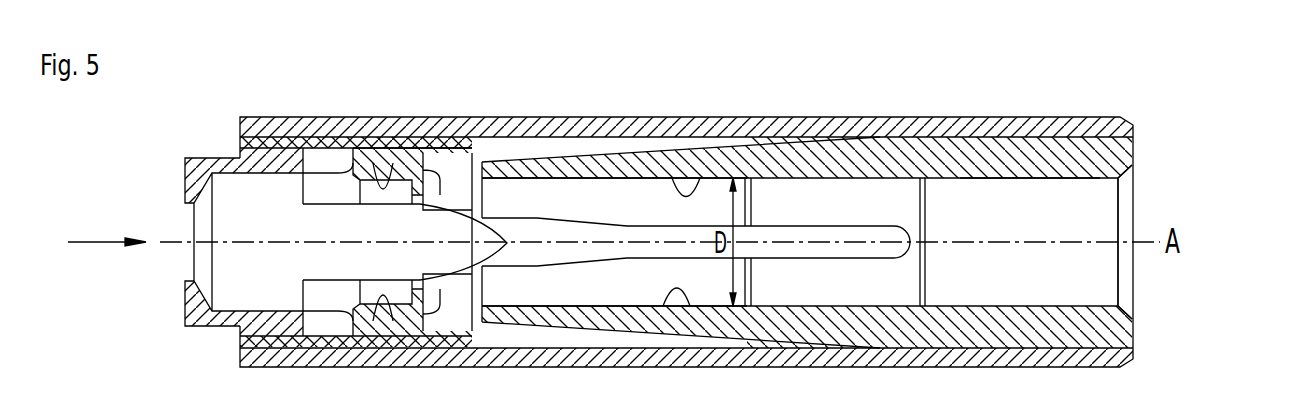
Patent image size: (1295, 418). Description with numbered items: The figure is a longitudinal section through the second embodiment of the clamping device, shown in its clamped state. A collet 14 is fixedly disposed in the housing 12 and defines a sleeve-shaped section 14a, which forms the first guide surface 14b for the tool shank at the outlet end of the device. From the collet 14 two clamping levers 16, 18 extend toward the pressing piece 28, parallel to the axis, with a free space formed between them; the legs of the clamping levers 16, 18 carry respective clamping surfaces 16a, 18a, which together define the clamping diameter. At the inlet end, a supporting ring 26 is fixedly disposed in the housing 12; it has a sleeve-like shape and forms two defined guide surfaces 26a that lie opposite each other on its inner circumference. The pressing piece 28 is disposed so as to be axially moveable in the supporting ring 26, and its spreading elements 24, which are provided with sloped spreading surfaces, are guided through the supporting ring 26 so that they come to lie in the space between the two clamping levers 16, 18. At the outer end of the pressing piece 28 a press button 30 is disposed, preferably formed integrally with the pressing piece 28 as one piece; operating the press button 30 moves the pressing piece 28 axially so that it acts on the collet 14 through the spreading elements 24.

The housing 12 is at (806, 130).
The collet 14 is at (878, 172).
The sleeve-shaped section 14a is at (1033, 162).
The first guide surface 14b is at (1075, 180).
The clamping lever 16 is at (640, 162).
The clamping surface 16a is at (700, 178).
The clamping lever 18 is at (637, 312).
The clamping surface 18a is at (687, 312).
The spreading element 24 is at (455, 218).
The supporting ring 26 is at (408, 160).
The guide surface 26a is at (378, 186).
The pressing piece 28 is at (270, 162).
The press button 30 is at (203, 160).